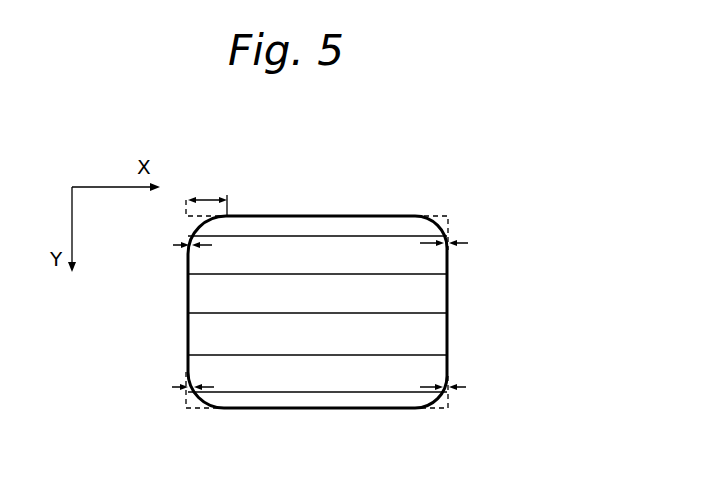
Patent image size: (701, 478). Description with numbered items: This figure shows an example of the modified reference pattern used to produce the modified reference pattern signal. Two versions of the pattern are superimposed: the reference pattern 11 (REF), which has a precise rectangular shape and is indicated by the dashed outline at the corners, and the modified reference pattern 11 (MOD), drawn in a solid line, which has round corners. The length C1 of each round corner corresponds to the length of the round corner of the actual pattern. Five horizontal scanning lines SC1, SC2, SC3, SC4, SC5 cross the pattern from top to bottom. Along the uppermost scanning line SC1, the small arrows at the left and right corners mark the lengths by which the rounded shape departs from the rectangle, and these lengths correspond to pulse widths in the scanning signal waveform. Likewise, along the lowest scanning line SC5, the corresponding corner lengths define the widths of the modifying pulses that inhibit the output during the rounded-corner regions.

The reference pattern 11 is at (332, 215).
The scanning line SC1 is at (447, 237).
The scanning line SC2 is at (447, 275).
The scanning line SC3 is at (447, 314).
The scanning line SC4 is at (447, 356).
The scanning line SC5 is at (447, 393).
The length of the round corner C1 is at (211, 195).